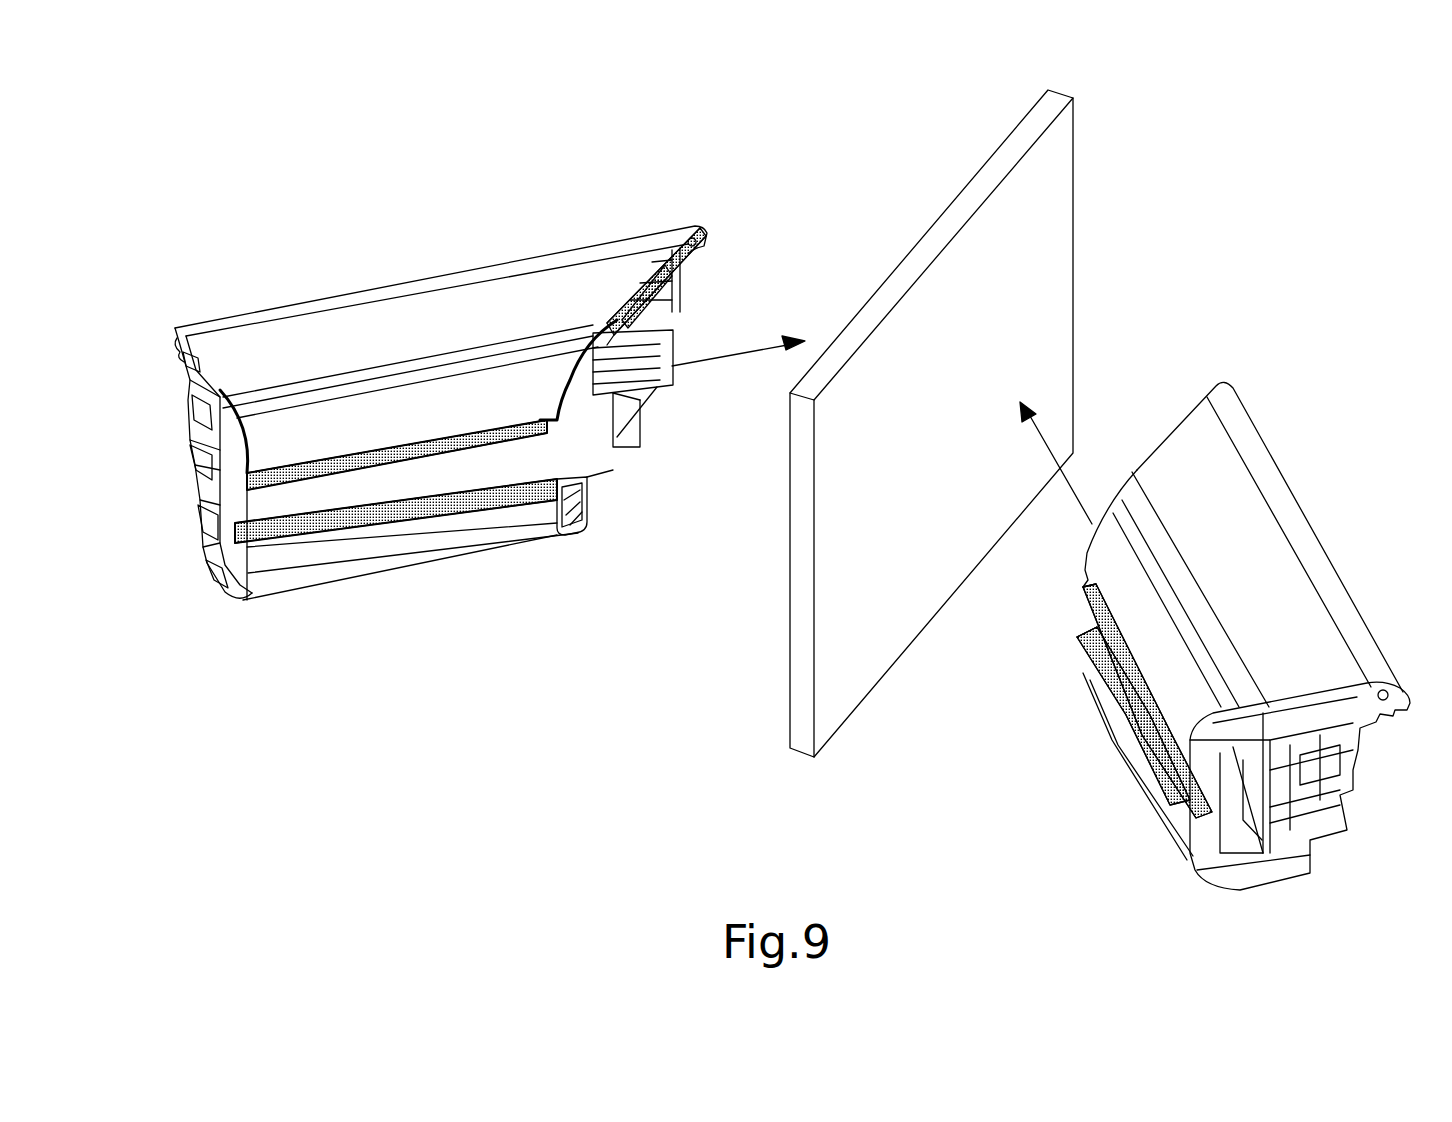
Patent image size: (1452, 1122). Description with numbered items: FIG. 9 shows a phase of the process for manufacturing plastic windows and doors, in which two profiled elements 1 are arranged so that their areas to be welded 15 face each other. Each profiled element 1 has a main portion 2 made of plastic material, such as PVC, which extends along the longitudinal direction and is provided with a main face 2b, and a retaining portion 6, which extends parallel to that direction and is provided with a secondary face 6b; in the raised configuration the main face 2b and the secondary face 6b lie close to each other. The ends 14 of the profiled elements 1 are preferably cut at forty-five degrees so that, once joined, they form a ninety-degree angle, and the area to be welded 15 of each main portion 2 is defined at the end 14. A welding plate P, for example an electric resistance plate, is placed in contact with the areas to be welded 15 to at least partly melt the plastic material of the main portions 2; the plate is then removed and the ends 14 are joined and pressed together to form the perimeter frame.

The profiled element 1 is at (146, 606).
The main portion 2 is at (186, 440).
The main face 2b is at (236, 340).
The retaining portion 6 is at (262, 450).
The secondary face 6b is at (1085, 557).
The end 14 is at (610, 268).
The area to be welded 15 is at (653, 336).
The welding plate P is at (997, 163).